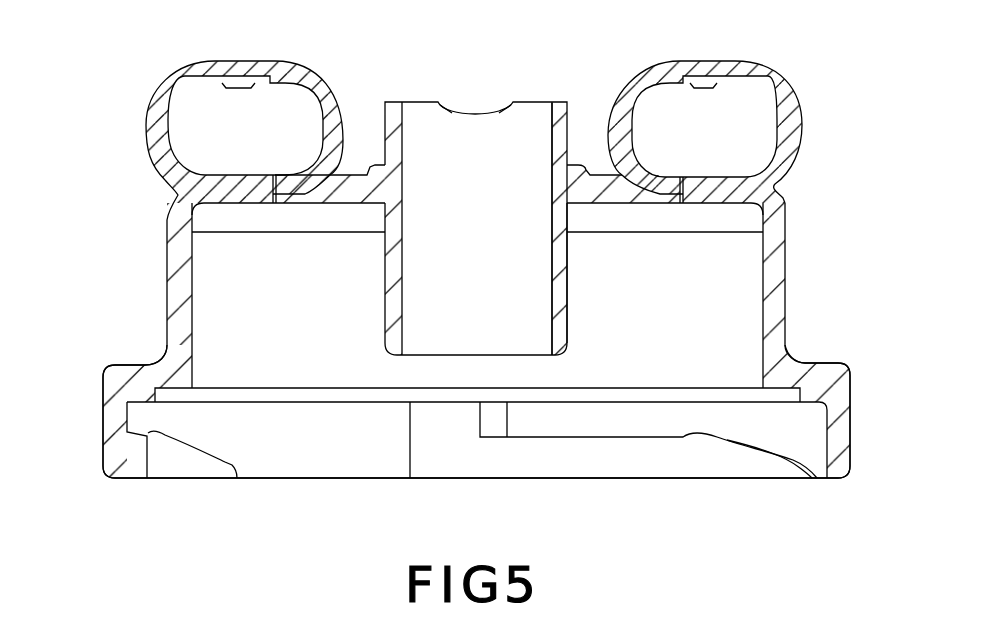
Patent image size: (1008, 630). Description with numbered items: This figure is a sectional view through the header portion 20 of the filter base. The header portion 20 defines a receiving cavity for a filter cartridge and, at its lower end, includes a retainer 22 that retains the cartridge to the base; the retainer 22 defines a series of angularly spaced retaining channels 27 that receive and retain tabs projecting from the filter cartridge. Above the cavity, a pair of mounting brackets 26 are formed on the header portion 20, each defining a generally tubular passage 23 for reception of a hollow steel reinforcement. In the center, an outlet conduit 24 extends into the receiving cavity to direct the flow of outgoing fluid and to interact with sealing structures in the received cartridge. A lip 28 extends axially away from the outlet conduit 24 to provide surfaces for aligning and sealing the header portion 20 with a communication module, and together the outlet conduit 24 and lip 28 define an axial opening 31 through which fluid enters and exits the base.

The header portion 20 is at (118, 272).
The retainer 22 is at (852, 433).
The tubular passages 23 is at (220, 112).
The outlet conduit 24 is at (566, 296).
The mounting brackets 26 is at (150, 108).
The retaining channels 27 is at (262, 448).
The lip 28 is at (392, 100).
The axial opening 31 is at (457, 223).